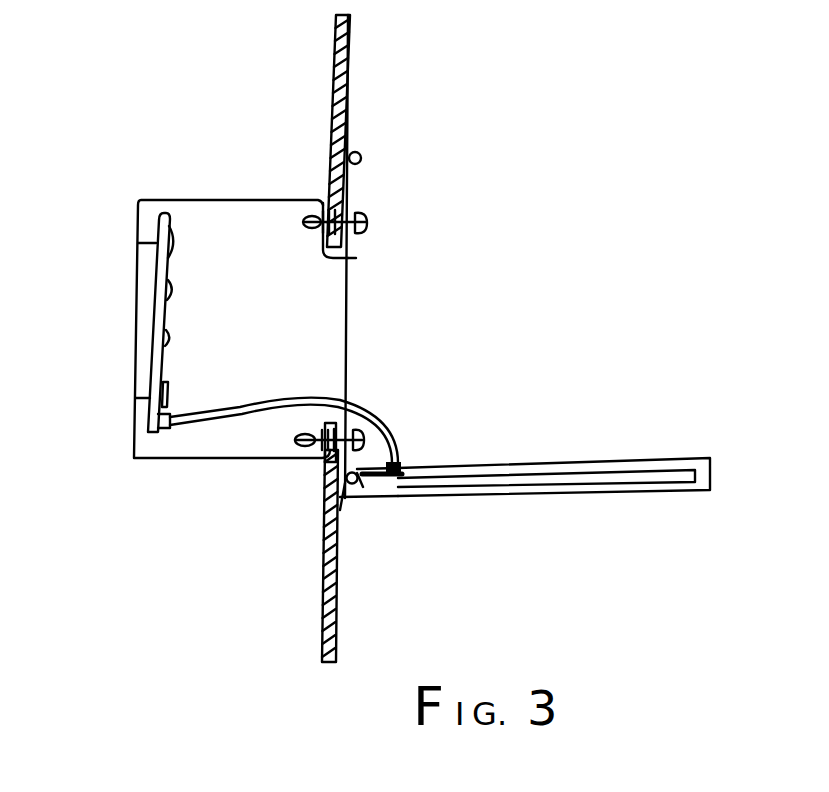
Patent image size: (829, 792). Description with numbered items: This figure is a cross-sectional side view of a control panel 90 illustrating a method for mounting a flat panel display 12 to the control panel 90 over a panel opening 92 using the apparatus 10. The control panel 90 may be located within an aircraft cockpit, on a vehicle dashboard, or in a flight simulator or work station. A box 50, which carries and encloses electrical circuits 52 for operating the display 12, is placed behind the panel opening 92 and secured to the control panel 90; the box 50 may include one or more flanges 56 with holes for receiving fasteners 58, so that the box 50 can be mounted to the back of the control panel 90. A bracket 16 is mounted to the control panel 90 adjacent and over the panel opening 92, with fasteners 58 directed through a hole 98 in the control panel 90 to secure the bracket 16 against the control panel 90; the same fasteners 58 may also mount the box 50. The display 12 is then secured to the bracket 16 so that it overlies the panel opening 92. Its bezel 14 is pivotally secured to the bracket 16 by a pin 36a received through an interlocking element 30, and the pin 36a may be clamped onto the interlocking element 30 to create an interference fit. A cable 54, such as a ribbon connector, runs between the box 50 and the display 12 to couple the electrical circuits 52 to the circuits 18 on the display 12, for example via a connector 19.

The apparatus 10 is at (592, 304).
The display 12 is at (575, 501).
The bezel 14 is at (675, 507).
The bracket 16 is at (364, 297).
The circuits 18 is at (353, 494).
The connector 19 is at (398, 461).
The interlocking element 30 is at (362, 154).
The pin 36a is at (325, 490).
The box 50 is at (190, 176).
The electrical circuits 52 is at (158, 353).
The cable 54 is at (245, 415).
The flange 56 is at (314, 238).
The fastener 58 is at (367, 217).
The control panel 90 is at (366, 45).
The panel opening 92 is at (348, 258).
The hole 98 is at (325, 205).